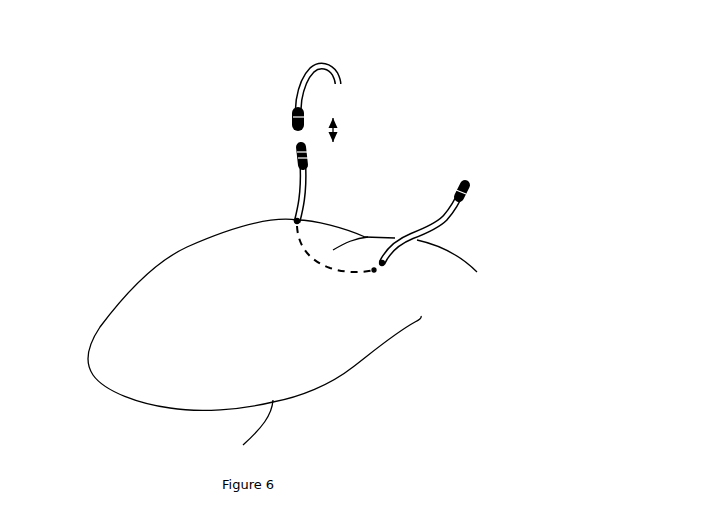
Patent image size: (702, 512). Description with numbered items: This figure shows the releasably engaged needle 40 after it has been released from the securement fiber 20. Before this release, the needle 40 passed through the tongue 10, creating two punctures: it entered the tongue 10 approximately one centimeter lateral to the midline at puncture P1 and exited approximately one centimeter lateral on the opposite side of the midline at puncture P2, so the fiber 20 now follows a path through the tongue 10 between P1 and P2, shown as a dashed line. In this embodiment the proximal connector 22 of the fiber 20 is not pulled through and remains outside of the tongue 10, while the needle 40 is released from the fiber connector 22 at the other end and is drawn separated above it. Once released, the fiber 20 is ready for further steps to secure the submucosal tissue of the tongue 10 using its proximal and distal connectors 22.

The tongue 10 is at (150, 263).
The fiber 20 is at (417, 222).
The fiber connector 22 is at (290, 155).
The needle 40 is at (290, 87).
The puncture P1 is at (382, 265).
The puncture P2 is at (292, 220).